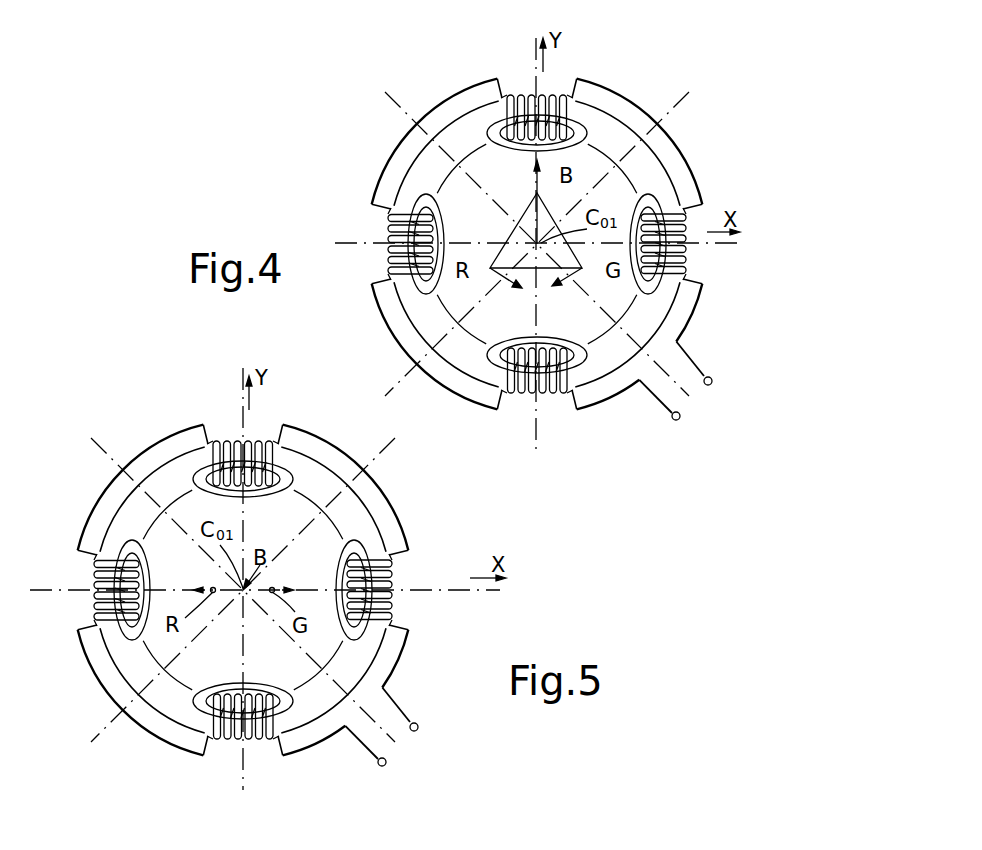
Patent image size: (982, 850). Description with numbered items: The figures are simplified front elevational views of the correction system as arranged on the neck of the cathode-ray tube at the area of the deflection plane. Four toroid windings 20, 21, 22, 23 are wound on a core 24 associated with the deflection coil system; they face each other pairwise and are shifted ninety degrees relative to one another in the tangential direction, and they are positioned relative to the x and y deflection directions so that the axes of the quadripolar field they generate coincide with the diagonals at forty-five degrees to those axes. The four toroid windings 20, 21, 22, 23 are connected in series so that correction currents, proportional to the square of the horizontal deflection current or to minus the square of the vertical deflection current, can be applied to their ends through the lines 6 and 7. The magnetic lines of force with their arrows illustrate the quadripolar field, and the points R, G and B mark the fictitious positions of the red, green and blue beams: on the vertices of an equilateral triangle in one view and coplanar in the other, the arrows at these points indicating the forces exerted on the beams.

In FIG. 4, the line 6 is at (665, 404).
In FIG. 5, the line 6 is at (366, 752).
In FIG. 4, the line 7 is at (702, 374).
In FIG. 5, the line 7 is at (405, 712).
In FIG. 4, the toroid winding 20 is at (385, 240).
In FIG. 5, the toroid winding 20 is at (92, 602).
In FIG. 4, the toroid winding 21 is at (533, 400).
In FIG. 5, the toroid winding 21 is at (235, 736).
In FIG. 4, the toroid winding 22 is at (548, 92).
In FIG. 5, the toroid winding 22 is at (256, 440).
In FIG. 4, the toroid winding 23 is at (687, 228).
In FIG. 5, the toroid winding 23 is at (388, 588).
In FIG. 4, the core 24 is at (608, 370).
In FIG. 5, the core 24 is at (373, 652).